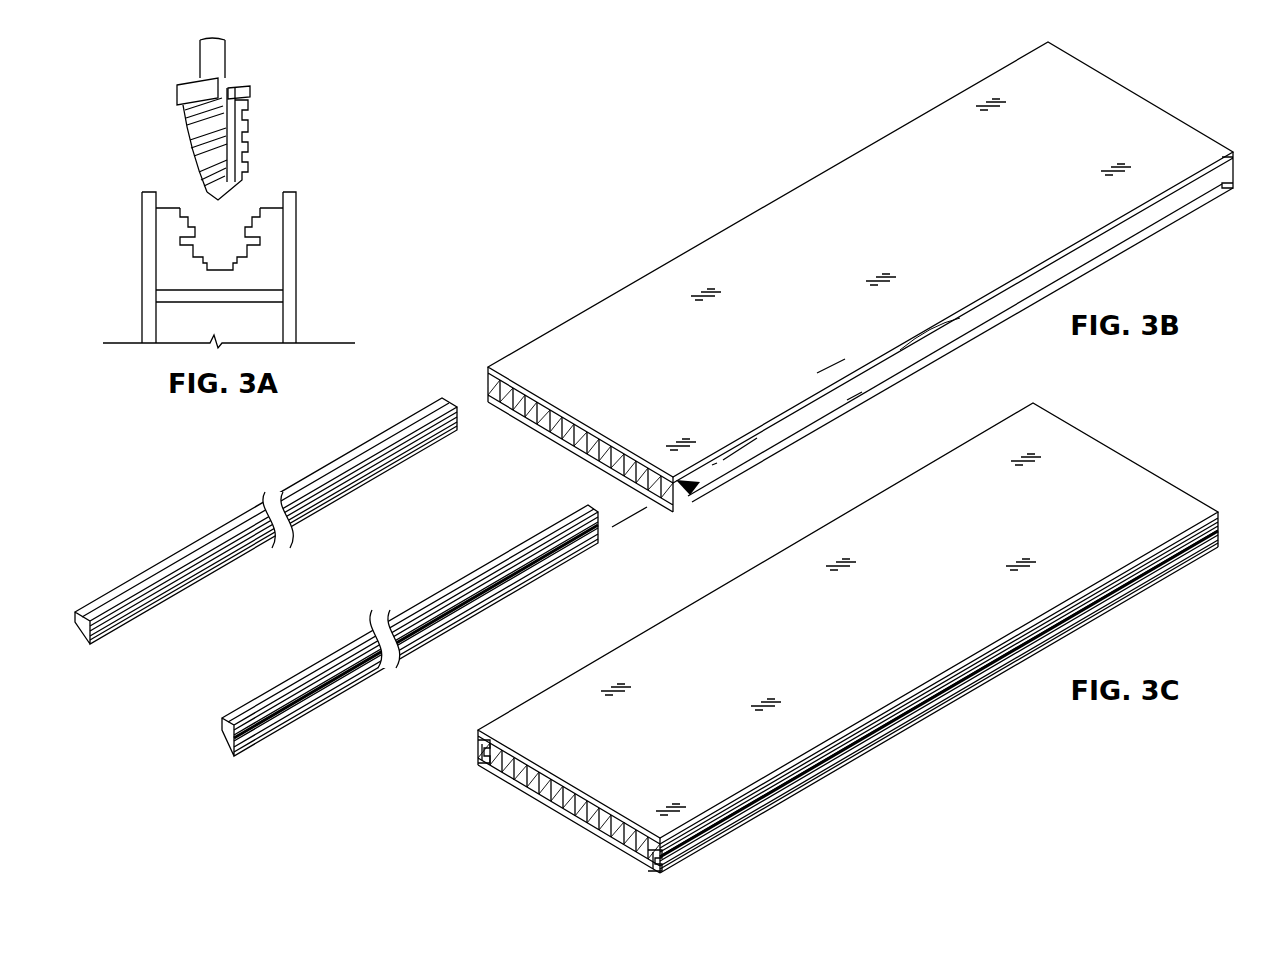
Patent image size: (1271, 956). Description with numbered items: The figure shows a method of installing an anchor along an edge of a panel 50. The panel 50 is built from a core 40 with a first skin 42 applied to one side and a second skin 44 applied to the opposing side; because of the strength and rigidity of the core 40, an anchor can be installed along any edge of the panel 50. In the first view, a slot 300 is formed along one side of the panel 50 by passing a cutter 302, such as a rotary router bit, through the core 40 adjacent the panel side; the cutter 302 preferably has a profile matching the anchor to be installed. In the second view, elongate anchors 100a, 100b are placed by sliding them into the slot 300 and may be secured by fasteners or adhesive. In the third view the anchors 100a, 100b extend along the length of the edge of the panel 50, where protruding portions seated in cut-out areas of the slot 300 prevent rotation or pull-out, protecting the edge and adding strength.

In FIG. 3A, the core 40 is at (270, 275).
In FIG. 3B, the core 40 is at (875, 378).
In FIG. 3C, the core 40 is at (556, 812).
In FIG. 3A, the first skin 42 is at (143, 247).
In FIG. 3B, the first skin 42 is at (1130, 240).
In FIG. 3C, the first skin 42 is at (1125, 597).
In FIG. 3A, the second skin 44 is at (288, 235).
In FIG. 3B, the second skin 44 is at (1165, 170).
In FIG. 3C, the second skin 44 is at (1152, 537).
In FIG. 3A, the panel 50 is at (235, 247).
In FIG. 3B, the panel 50 is at (860, 288).
In FIG. 3C, the panel 50 is at (831, 656).
In FIG. 3A, the slot 300 is at (236, 216).
In FIG. 3B, the slot 300 is at (692, 484).
In FIG. 3A, the cutter 302 is at (245, 132).
In FIG. 3B, the first elongated profile strip 100a is at (510, 605).
In FIG. 3C, the first elongated profile strip 100a is at (646, 860).
In FIG. 3B, the second elongated profile strip 100b is at (400, 475).
In FIG. 3C, the second elongated profile strip 100b is at (478, 770).